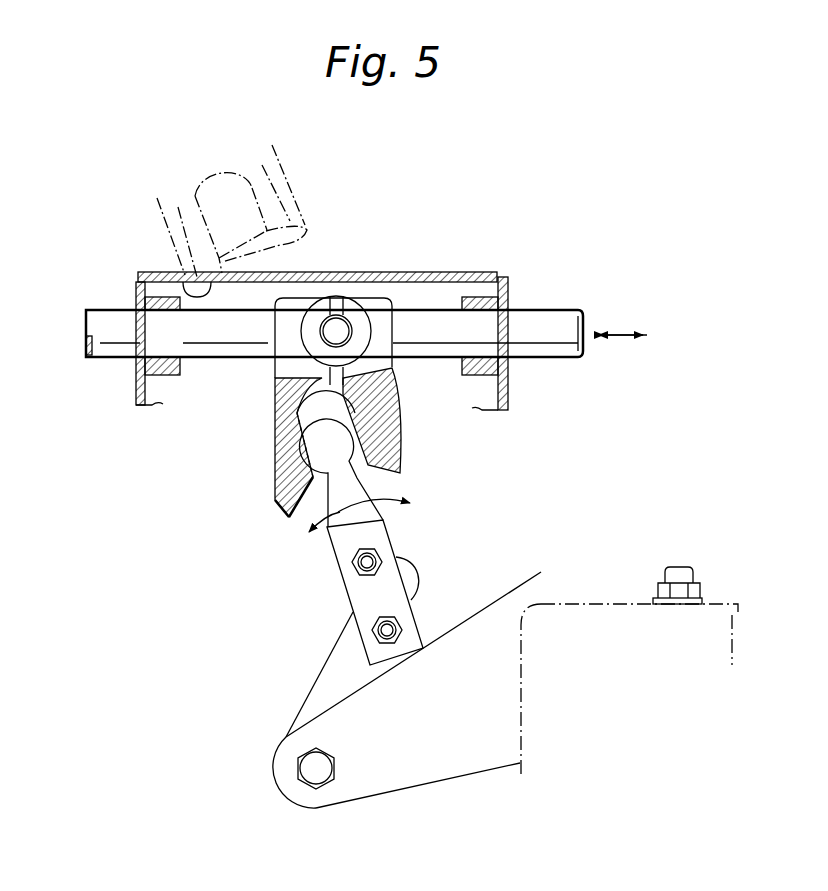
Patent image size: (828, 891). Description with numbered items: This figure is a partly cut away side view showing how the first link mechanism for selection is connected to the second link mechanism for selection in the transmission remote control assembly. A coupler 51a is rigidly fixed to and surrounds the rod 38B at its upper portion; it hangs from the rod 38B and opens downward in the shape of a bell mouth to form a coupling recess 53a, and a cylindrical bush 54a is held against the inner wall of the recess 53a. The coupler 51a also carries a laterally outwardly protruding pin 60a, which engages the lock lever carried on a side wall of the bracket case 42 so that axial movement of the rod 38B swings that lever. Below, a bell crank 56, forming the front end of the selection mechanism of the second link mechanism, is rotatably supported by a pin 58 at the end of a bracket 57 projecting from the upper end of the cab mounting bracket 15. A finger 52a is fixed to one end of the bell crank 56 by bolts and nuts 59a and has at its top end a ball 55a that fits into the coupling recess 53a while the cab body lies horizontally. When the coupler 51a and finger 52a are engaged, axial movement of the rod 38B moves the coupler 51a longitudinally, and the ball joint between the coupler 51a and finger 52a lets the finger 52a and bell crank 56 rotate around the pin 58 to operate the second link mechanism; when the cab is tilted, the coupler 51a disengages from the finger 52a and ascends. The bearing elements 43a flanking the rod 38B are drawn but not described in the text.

The rod 38B is at (102, 309).
The pin 60a is at (338, 330).
The bracket case 42 is at (475, 272).
The bearing brackets 43a is at (497, 293).
The coupler 51a is at (266, 374).
The coupling recess 53a is at (277, 422).
The cylindrical bush 54a is at (287, 493).
The ball 55a is at (383, 430).
The finger 52a is at (392, 535).
The bolts and nuts 59a is at (372, 630).
The bell crank 56 is at (317, 688).
The bracket 57 is at (484, 609).
The pin 58 is at (310, 769).
The cab mounting bracket 15 is at (601, 604).